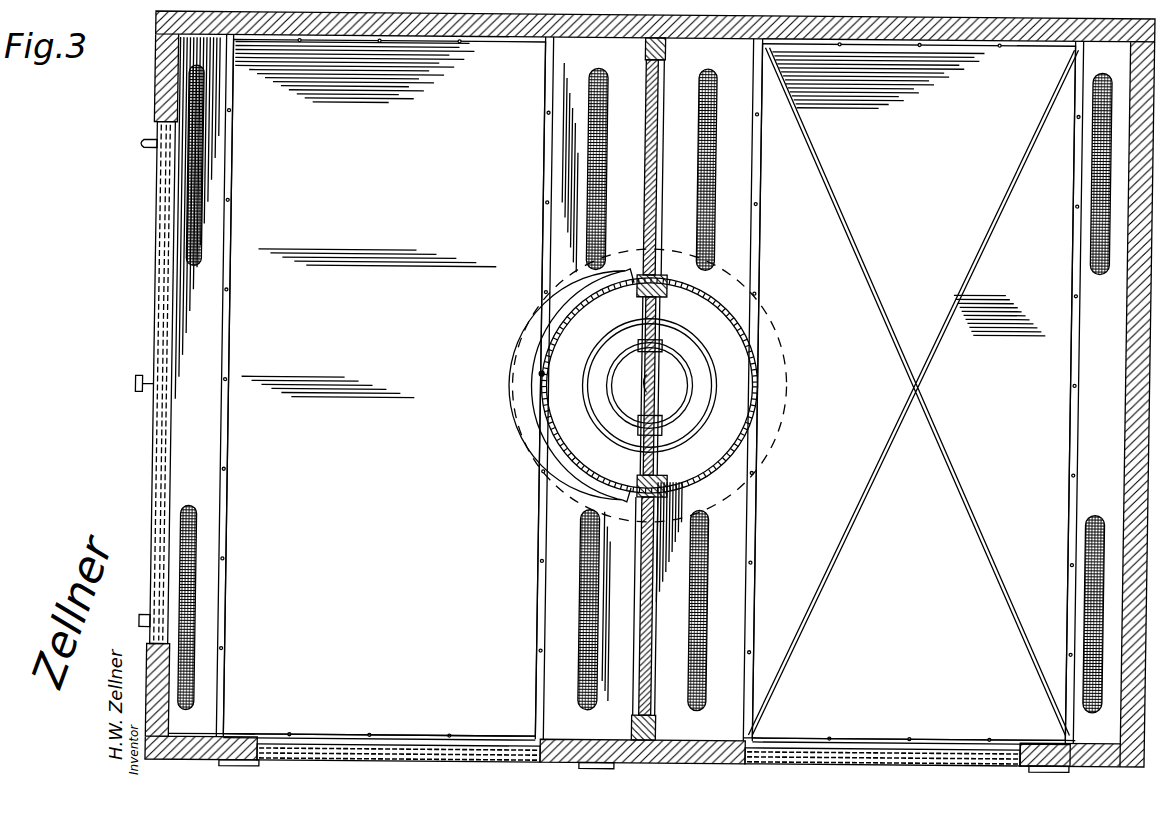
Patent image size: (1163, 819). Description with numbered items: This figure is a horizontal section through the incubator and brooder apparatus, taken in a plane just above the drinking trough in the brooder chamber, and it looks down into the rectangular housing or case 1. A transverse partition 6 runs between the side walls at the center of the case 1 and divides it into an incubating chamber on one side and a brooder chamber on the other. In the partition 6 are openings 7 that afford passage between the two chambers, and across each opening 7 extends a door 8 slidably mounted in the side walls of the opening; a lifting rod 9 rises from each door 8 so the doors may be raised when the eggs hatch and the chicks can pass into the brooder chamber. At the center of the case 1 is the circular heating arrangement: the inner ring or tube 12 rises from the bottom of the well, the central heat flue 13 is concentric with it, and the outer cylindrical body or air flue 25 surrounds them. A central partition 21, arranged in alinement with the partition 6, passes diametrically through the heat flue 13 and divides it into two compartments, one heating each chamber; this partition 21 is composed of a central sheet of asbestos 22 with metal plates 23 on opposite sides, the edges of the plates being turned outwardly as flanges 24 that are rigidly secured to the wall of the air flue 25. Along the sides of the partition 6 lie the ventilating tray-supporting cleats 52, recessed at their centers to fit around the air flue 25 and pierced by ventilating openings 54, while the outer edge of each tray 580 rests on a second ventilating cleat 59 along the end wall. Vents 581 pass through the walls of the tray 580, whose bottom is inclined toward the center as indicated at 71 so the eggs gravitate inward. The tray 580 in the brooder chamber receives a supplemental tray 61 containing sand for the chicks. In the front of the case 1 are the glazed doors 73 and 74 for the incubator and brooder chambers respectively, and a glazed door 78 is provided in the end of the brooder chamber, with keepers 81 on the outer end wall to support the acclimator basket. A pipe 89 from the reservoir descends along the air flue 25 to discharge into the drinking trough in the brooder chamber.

The housing or case 1 is at (603, 24).
The transverse partition 6 is at (645, 45).
The openings 7 is at (666, 78).
The door 8 is at (652, 125).
The lifting rod 9 is at (546, 414).
The inner ring or tube 12 is at (722, 412).
The central heat flue 13 is at (685, 382).
The central partition 21 is at (650, 378).
The central sheet of asbestos 22 is at (662, 455).
The metal plates 23 is at (648, 316).
The flanges 24 is at (672, 296).
The outer cylindrical body or air flue 25 is at (735, 448).
The ventilating tray-supporting cleats 52 is at (547, 582).
The ventilating openings 54 is at (596, 108).
The second ventilating cleat 59 is at (230, 440).
The supplemental tray 61 is at (356, 387).
The inclined bottom of the tray 71 is at (930, 372).
The glazed door 73 is at (472, 752).
The glazed door 74 is at (1050, 757).
The glazed door 78 is at (160, 300).
The keepers 81 is at (148, 142).
The pipe 89 is at (543, 371).
The tray 580 is at (914, 392).
The vents 581 is at (388, 741).